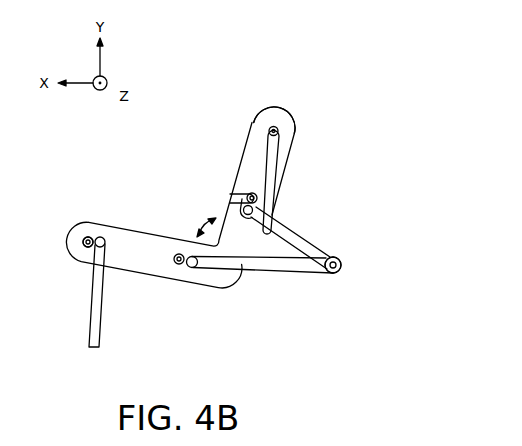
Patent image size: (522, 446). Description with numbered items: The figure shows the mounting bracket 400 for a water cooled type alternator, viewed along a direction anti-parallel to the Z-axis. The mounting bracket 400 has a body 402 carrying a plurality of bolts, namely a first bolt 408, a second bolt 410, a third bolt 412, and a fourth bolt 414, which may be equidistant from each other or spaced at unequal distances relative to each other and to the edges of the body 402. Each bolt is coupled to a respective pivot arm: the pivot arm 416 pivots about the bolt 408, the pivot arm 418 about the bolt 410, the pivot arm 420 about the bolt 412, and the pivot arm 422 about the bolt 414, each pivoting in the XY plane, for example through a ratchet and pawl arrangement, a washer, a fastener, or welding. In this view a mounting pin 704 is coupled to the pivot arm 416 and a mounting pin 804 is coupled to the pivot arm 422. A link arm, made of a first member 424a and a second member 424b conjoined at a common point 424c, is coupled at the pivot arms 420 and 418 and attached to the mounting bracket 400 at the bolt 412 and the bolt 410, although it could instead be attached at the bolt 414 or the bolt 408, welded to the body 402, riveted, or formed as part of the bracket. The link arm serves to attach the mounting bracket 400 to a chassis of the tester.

The mounting bracket 400 is at (308, 122).
The body 402 is at (87, 221).
The bolt 408 is at (91, 239).
The bolt 410 is at (182, 255).
The bolt 412 is at (248, 196).
The bolt 414 is at (269, 131).
The pivot arm 416 is at (88, 247).
The pivot arm 418 is at (190, 269).
The pivot arm 420 is at (248, 195).
The pivot arm 422 is at (268, 139).
The first member 424a is at (292, 228).
The second member 424b is at (272, 275).
The common point 424c is at (333, 277).
The mounting pin 704 is at (98, 285).
The mounting pin 804 is at (287, 168).